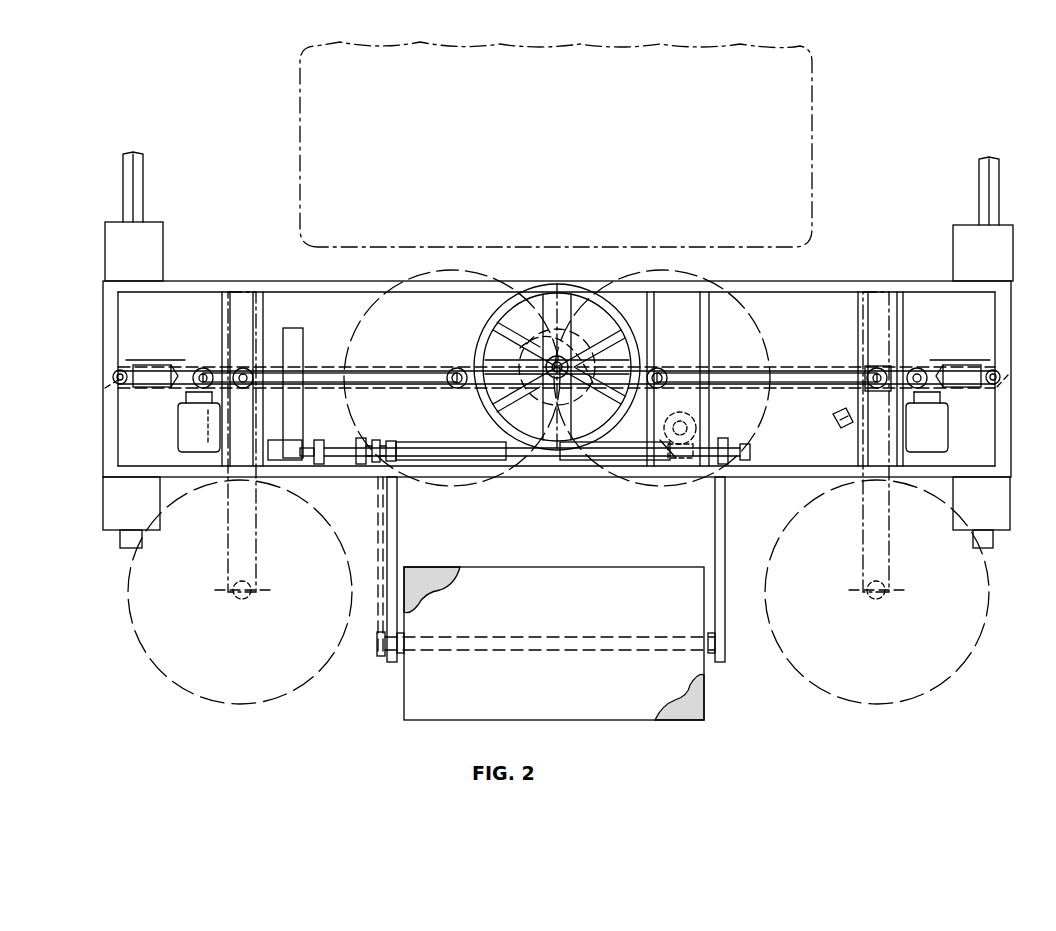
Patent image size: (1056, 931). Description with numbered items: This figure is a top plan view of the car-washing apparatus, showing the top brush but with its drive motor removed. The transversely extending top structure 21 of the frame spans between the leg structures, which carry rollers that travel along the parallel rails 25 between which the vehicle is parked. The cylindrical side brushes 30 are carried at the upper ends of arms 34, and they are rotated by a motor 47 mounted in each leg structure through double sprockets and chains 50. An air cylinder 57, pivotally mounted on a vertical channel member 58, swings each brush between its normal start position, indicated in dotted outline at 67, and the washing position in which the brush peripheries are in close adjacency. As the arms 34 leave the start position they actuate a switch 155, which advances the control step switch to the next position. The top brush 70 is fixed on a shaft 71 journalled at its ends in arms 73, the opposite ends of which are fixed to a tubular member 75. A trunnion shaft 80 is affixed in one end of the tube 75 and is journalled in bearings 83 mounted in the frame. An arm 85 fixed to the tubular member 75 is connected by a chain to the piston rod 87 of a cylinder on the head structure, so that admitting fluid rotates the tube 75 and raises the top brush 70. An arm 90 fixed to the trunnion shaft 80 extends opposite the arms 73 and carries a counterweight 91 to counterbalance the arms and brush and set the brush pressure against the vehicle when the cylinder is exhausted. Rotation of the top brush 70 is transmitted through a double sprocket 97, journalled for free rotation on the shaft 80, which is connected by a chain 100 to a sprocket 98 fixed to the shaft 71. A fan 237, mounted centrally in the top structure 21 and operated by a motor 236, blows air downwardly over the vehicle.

The top structure 21 is at (830, 283).
The rails 25 is at (125, 203).
The side brushes 30 is at (474, 270).
The arms 34 is at (372, 383).
The motor 47 is at (188, 428).
The chains 50 is at (323, 366).
The air cylinder 57 is at (158, 378).
The vertical channel member 58 is at (112, 385).
The start position of brushes 67 is at (138, 600).
The top brush 70 is at (552, 580).
The shaft 71 is at (522, 637).
The arms 73 is at (392, 516).
The tubular member 75 is at (430, 480).
The trunnion shaft 80 is at (318, 440).
The bearings 83 is at (322, 456).
The arm 85 is at (666, 462).
The piston rod 87 is at (698, 416).
The arm 90 is at (298, 412).
The counterweight 91 is at (296, 338).
The double sprocket 97 is at (372, 438).
The sprocket 98 is at (380, 650).
The chain 100 is at (380, 540).
The switch 155 is at (834, 420).
The motor 236 is at (520, 380).
The fan 237 is at (512, 336).